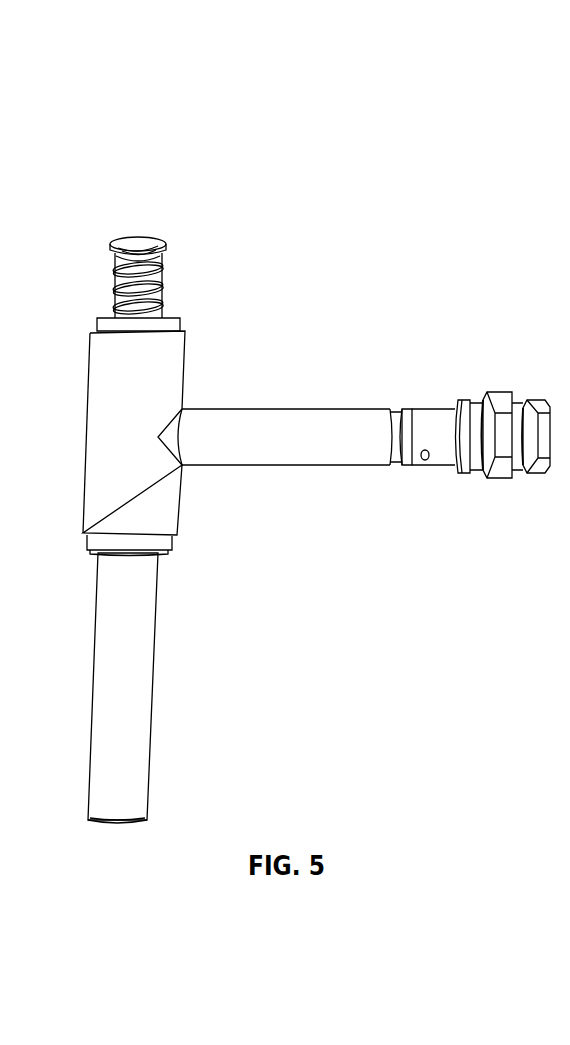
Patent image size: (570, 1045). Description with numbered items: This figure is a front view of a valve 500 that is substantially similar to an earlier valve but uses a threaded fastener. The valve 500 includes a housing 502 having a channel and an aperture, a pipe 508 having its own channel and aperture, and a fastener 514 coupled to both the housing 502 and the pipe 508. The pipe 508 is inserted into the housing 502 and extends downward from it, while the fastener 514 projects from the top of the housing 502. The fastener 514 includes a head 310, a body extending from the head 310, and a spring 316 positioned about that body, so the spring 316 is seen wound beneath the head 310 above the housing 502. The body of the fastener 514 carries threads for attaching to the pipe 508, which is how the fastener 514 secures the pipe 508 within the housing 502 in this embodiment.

The valve 500 is at (295, 151).
The housing 502 is at (174, 372).
The fastener 514 is at (168, 213).
The spring 316 is at (166, 283).
The head 310 is at (137, 233).
The pipe 508 is at (154, 656).